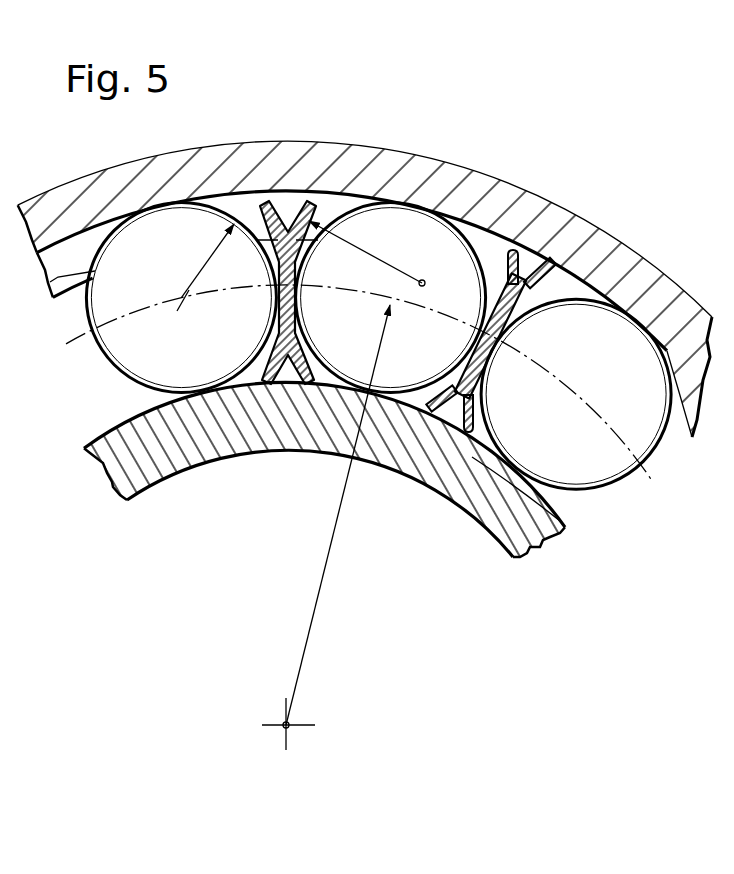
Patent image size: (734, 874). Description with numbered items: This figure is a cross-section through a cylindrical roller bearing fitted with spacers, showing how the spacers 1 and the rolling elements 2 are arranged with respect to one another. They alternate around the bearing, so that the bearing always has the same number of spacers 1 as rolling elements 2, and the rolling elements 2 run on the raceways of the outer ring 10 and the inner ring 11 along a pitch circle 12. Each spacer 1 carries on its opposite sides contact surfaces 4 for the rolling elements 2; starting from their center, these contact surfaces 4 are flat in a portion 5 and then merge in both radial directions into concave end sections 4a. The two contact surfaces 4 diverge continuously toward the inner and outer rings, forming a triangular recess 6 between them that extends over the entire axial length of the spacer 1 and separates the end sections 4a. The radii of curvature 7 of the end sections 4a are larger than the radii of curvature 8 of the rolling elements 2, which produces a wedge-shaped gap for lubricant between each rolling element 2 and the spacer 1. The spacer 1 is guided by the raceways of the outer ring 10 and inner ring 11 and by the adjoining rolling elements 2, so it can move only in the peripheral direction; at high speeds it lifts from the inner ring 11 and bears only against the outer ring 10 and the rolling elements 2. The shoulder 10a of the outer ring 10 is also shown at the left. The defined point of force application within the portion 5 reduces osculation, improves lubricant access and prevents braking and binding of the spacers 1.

The spacer 1 is at (553, 263).
The rolling element 2 is at (165, 228).
The contact surface 4 is at (297, 263).
The end section 4a is at (504, 268).
The flat part of the contact surface 5 is at (474, 338).
The triangular recess 6 is at (283, 222).
The radius of curvature 7 is at (373, 258).
The radius of curvature of the rolling elements 8 is at (200, 278).
The outer ring 10 is at (424, 188).
The shoulder of outer ring 10a is at (52, 287).
The inner ring 11 is at (534, 552).
The pitch circle 12 is at (318, 612).